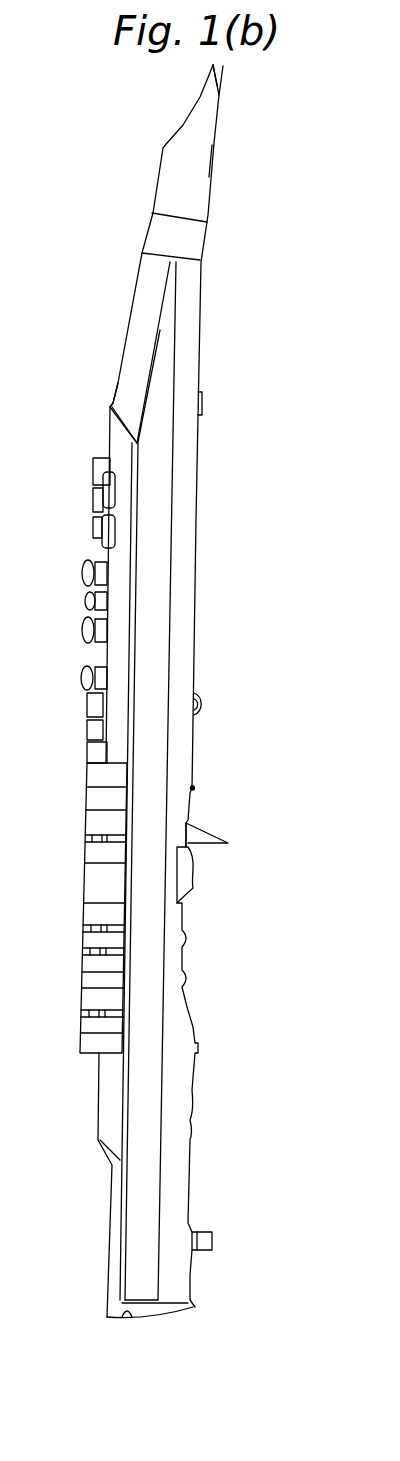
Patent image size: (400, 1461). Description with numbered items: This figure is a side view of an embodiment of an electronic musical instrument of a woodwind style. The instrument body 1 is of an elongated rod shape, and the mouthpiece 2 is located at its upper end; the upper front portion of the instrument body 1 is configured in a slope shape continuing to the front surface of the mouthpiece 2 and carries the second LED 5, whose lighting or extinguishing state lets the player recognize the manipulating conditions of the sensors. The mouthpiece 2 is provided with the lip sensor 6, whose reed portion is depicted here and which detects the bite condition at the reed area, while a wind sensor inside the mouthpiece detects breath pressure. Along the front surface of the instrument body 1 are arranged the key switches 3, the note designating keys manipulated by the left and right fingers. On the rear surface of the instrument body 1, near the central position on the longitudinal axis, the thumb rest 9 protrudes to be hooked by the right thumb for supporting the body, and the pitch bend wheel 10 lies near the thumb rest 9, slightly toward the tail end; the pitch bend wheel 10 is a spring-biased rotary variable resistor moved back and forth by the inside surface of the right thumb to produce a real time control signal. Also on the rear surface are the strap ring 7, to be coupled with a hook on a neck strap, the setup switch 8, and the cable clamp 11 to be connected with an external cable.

The instrument body 1 is at (193, 367).
The mouthpiece 2 is at (202, 128).
The key switches 3 is at (63, 468).
The second LED 5 is at (118, 378).
The lip sensor 6 is at (222, 90).
The strap ring 7 is at (210, 697).
The setup switch 8 is at (193, 787).
The thumb rest 9 is at (208, 833).
The pitch bend wheel 10 is at (193, 870).
The cable clamp 11 is at (212, 1240).